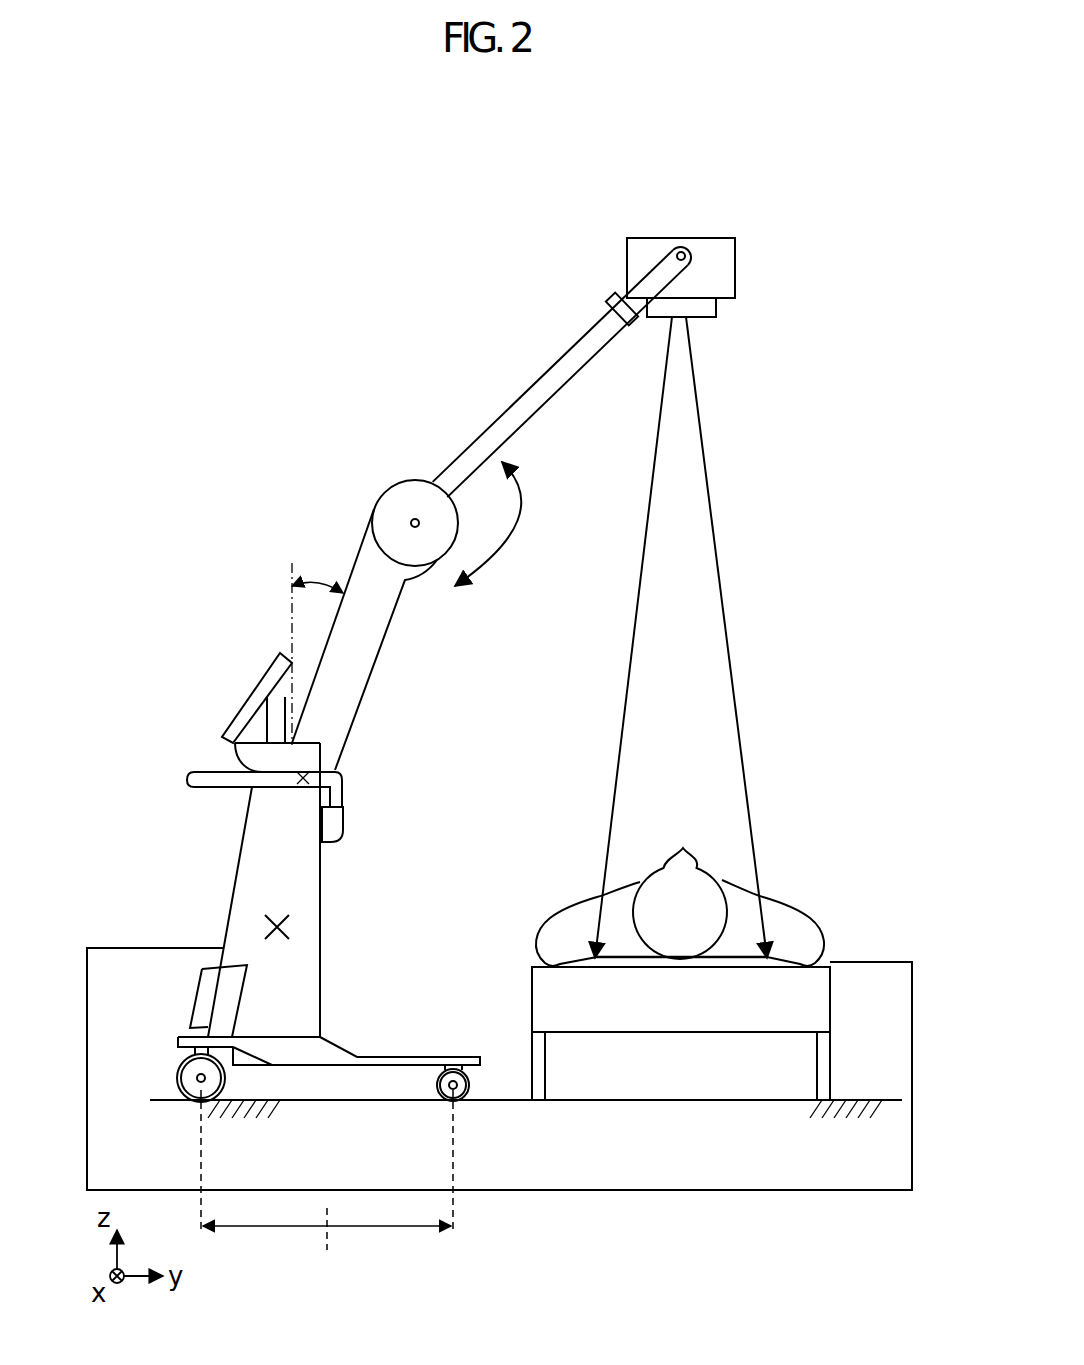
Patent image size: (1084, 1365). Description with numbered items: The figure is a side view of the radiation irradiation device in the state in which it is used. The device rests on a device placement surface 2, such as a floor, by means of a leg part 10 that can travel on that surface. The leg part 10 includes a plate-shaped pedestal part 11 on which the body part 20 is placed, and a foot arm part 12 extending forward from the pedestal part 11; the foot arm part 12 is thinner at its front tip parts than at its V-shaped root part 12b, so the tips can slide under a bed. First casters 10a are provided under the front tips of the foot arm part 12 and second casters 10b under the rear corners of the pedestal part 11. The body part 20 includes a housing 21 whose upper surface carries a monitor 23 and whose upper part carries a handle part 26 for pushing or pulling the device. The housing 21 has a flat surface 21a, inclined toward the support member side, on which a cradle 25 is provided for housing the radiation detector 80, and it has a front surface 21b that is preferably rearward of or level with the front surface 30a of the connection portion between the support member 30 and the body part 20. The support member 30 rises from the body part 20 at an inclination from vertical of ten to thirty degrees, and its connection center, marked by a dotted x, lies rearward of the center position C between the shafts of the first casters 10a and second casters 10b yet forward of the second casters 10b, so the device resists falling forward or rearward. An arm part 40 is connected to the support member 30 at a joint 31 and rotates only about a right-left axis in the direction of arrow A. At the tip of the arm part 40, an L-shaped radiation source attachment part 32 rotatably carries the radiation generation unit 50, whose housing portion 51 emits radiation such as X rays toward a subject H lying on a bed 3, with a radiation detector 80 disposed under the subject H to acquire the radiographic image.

The device placement surface 2 is at (873, 1100).
The bed 3 is at (820, 995).
The leg part 10 is at (278, 1080).
The first casters 10a is at (447, 1090).
The second casters 10b is at (195, 1088).
The pedestal part 11 is at (178, 1042).
The foot arm part 12 is at (410, 1057).
The V-shaped root part 12b is at (326, 1057).
The body part 20 is at (325, 895).
The housing 21 is at (313, 986).
The flat surface 21a is at (230, 900).
The front surface 21b is at (321, 945).
The monitor 23 is at (272, 665).
The cradle 25 is at (198, 990).
The handle part 26 is at (187, 780).
The support member 30 is at (377, 650).
The front surface of connection portion 30a is at (327, 781).
The joint 31 is at (390, 498).
The radiation source attachment part 32 is at (655, 277).
The arm part 40 is at (543, 380).
The radiation generation unit 50 is at (740, 252).
The X-ray tube housing 51 is at (718, 275).
The radiation detector 80 is at (757, 963).
The subject H is at (773, 900).
The arrow A is at (517, 505).
The center position C is at (327, 1187).